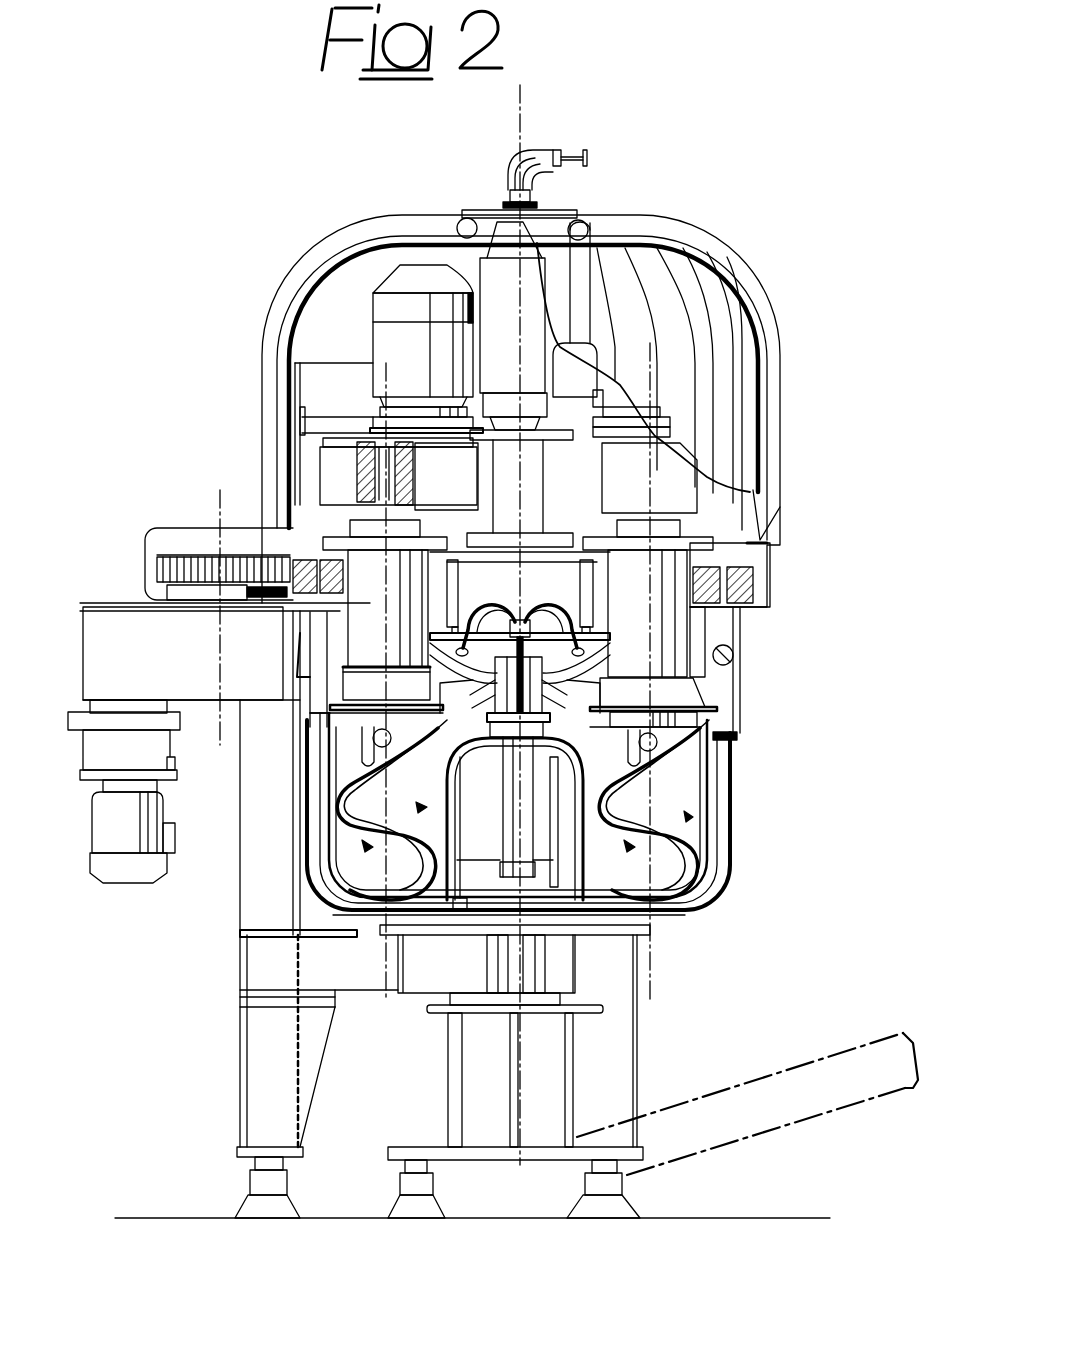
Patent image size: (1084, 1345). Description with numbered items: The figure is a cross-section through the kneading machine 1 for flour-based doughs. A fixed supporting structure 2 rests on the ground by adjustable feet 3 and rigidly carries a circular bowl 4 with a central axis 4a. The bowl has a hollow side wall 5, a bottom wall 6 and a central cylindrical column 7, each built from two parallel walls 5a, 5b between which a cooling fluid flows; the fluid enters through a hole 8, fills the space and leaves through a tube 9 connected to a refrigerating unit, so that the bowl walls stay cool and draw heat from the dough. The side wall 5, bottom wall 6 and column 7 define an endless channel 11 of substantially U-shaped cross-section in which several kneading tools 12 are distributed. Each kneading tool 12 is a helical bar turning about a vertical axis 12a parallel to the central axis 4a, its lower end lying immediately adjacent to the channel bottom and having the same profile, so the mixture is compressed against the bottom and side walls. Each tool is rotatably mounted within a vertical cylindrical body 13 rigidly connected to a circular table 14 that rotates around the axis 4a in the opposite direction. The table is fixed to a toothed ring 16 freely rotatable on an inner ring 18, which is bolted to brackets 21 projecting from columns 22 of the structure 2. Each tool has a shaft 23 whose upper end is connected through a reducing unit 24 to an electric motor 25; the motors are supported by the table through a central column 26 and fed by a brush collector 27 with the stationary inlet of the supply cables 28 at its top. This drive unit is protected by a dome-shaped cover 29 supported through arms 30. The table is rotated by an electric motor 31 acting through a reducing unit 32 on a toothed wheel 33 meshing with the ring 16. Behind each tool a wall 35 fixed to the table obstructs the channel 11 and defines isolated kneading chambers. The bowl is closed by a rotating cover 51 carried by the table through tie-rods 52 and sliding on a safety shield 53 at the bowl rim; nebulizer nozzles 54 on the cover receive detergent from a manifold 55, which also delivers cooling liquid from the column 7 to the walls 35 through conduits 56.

The kneading machine 1 is at (783, 355).
The fixed supporting structure 2 is at (237, 1095).
The adjustable feet 3 is at (300, 1200).
The circular bowl 4 is at (740, 873).
The central axis 4a is at (527, 104).
The side wall 5 is at (717, 760).
The parallel wall 5a is at (700, 787).
The parallel wall 5b is at (730, 835).
The bottom wall 6 is at (638, 912).
The central cylindrical column 7 is at (455, 800).
The hole 8 is at (463, 900).
The tube 9 is at (600, 885).
The endless channel 11 is at (693, 817).
The kneading tool 12 is at (380, 848).
The vertical axis 12a is at (712, 672).
The vertical cylindrical body 13 is at (293, 540).
The circular table 14 is at (545, 553).
The ring 16 is at (307, 605).
The inner ring 18 is at (723, 617).
The bracket 21 is at (307, 603).
The column 22 is at (267, 1032).
The shaft 23 is at (357, 465).
The reducing unit 24 is at (428, 460).
The electric motor 25 is at (385, 310).
The central column 26 is at (508, 487).
The brush collector 27 is at (473, 262).
The supply cables 28 is at (587, 163).
The dome-shaped cover 29 is at (745, 258).
The arm 30 is at (770, 392).
The electric motor 31 is at (132, 833).
The reducing unit 32 is at (112, 620).
The toothed wheel 33 is at (177, 553).
The wall 35 is at (365, 885).
The rotating cover 51 is at (740, 655).
The tie-rod 52 is at (577, 583).
The safety shield 53 is at (300, 710).
The nebulizer nozzle 54 is at (420, 647).
The manifold 55 is at (580, 667).
The conduit 56 is at (505, 735).